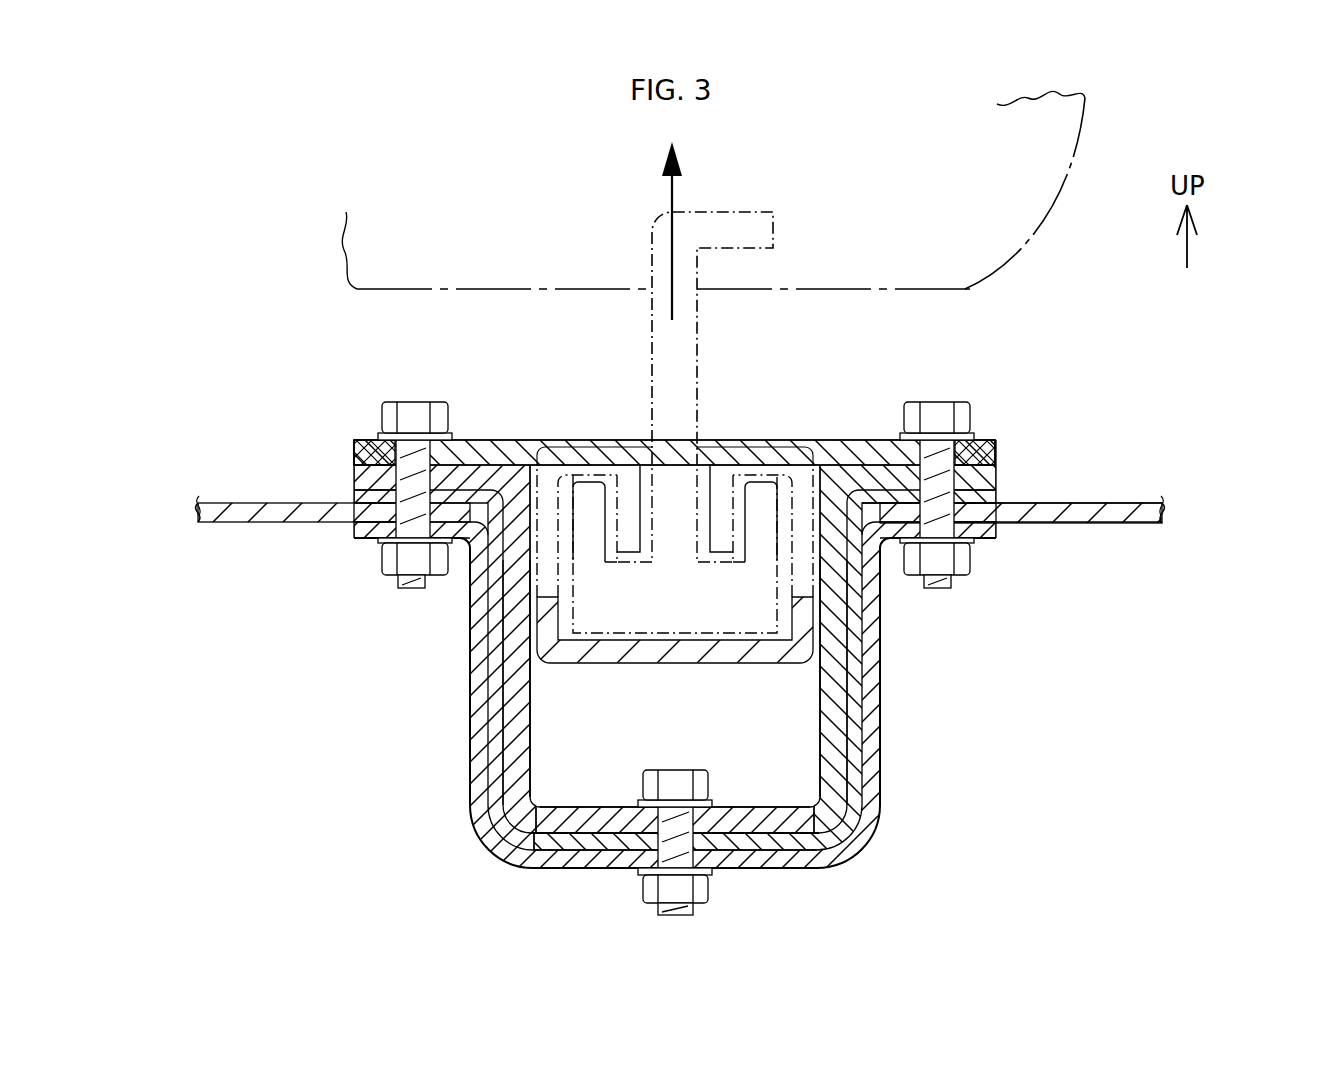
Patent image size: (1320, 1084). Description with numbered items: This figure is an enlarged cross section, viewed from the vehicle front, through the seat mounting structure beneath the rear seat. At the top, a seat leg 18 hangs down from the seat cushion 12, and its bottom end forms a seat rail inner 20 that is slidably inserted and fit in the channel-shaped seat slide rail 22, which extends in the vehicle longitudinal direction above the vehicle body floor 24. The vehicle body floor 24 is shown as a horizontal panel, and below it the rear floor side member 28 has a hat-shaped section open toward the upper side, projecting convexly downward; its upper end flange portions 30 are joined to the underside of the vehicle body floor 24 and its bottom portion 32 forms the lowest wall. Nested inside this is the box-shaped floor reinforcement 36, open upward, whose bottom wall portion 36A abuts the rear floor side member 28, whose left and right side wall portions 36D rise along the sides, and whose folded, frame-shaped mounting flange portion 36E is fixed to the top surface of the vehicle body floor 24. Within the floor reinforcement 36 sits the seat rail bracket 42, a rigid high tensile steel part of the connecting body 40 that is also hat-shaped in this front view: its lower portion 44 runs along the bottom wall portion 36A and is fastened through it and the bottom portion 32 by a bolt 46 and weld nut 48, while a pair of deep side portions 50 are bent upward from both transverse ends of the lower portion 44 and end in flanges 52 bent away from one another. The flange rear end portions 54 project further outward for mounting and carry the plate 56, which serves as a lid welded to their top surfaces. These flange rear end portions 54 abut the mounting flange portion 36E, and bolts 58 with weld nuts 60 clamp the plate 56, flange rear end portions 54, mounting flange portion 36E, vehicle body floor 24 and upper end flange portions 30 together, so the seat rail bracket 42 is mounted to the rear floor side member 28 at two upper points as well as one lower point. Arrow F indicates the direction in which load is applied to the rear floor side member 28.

The seat cushion 12 is at (1017, 262).
The arrow F is at (672, 187).
The seat leg 18 is at (697, 366).
The seat rail inner 20 is at (712, 642).
The seat slide rail 22 is at (753, 670).
The vehicle body floor 24 is at (1062, 492).
The rear floor side member 28 is at (885, 790).
The upper end flange portion 30 is at (365, 542).
The bottom portion 32 is at (545, 866).
The floor reinforcement 36 is at (866, 703).
The bottom wall portion 36A is at (772, 868).
The side wall portion 36D is at (475, 668).
The mounting flange portion 36E is at (1000, 520).
The connecting body 40 is at (803, 408).
The seat rail bracket 42 is at (500, 775).
The lower portion 44 is at (580, 807).
The bolt 46 is at (672, 768).
The weld nut 48 is at (648, 895).
The side portion 50 is at (532, 728).
The flange 52 is at (390, 455).
The flange rear end portion 54 is at (387, 458).
The plate 56 is at (505, 440).
The bolt 58 is at (418, 405).
The weld nut 60 is at (390, 567).